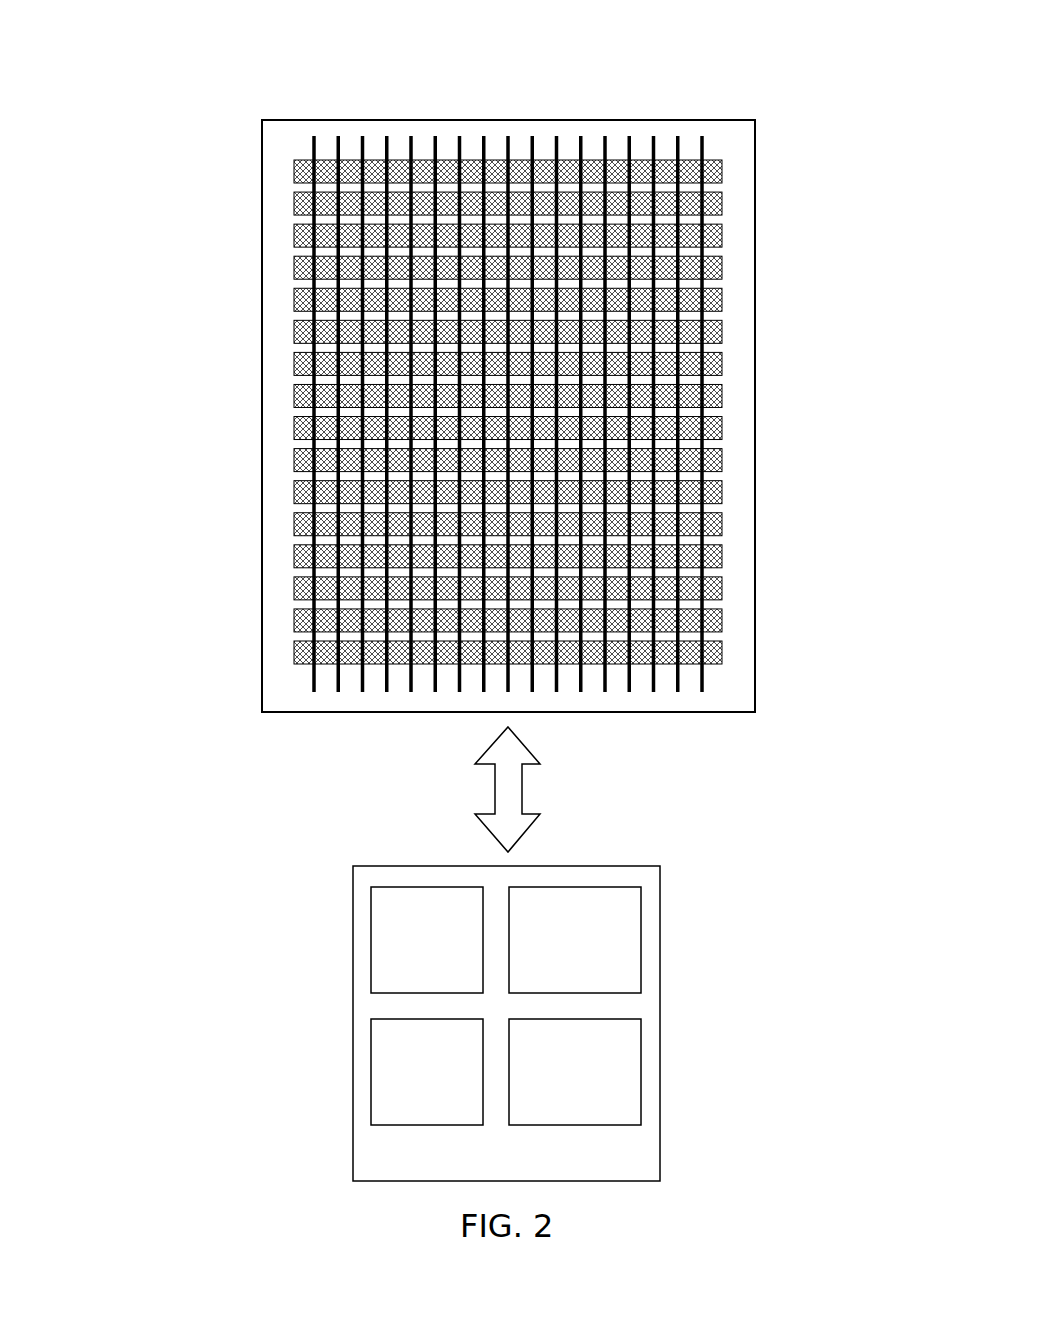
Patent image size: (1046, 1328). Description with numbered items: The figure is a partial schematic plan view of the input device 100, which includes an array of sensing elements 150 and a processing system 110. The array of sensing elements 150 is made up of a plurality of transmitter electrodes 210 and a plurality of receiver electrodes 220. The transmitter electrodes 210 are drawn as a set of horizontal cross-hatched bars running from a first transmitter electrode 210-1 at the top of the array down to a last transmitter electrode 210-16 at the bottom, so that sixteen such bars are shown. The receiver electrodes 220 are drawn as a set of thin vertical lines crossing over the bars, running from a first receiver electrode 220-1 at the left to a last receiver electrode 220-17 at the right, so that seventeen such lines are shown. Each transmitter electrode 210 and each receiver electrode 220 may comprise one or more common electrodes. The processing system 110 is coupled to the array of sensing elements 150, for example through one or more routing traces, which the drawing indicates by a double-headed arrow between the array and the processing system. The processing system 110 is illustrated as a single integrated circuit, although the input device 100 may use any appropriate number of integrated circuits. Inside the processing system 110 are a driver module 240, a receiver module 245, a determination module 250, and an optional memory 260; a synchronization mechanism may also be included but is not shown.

The input device 100 is at (226, 50).
The processing system 110 is at (619, 1160).
The array of sensing elements 150 is at (375, 140).
The transmitter electrodes 210 is at (133, 672).
The transmitter electrode 210-1 is at (293, 171).
The transmitter electrode 210-16 is at (293, 653).
The receiver electrodes 220 is at (710, 105).
The receiver electrode 220-1 is at (317, 147).
The receiver electrode 220-17 is at (702, 143).
The driver module 240 is at (410, 972).
The receiver module 245 is at (410, 1102).
The determination module 250 is at (558, 1102).
The optional memory 260 is at (558, 972).